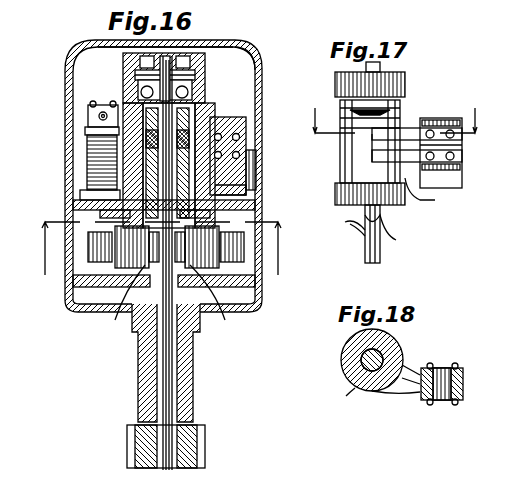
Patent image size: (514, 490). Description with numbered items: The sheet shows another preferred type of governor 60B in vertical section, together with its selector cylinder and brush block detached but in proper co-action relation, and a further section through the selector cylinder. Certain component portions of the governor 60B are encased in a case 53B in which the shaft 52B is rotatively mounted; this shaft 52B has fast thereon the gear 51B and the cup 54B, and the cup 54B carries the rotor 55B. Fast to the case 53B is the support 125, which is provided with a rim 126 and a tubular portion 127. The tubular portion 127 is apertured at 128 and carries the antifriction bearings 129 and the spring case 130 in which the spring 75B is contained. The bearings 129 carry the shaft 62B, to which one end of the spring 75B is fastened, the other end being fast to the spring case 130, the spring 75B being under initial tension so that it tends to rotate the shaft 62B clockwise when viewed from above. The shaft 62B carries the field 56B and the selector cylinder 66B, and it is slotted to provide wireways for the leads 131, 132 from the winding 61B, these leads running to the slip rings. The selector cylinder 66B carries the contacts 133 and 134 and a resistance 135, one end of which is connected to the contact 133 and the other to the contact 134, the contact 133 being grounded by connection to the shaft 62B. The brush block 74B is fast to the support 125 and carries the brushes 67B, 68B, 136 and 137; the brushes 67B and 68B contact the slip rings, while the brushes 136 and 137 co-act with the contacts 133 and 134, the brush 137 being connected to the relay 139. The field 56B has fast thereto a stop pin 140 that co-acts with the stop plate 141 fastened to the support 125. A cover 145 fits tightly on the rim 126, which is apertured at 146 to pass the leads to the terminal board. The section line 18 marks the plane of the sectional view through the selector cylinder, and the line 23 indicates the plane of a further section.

In FIG. 16, the governor 60B is at (207, 38).
In FIG. 16, the spring case 130 is at (205, 52).
In FIG. 16, the cover 145 is at (258, 62).
In FIG. 16, the spring 75B is at (127, 55).
In FIG. 16, the antifriction bearings 129 is at (190, 80).
In FIG. 17, the antifriction bearings 129 is at (336, 195).
In FIG. 16, the aperture 128 is at (172, 100).
In FIG. 16, the tubular portion 127 is at (123, 120).
In FIG. 16, the shaft 62B is at (172, 128).
In FIG. 17, the shaft 62B is at (380, 260).
In FIG. 18, the shaft 62B is at (378, 350).
In FIG. 16, the brush block 74B is at (246, 122).
In FIG. 17, the brush block 74B is at (455, 190).
In FIG. 16, the rim 126 is at (257, 162).
In FIG. 16, the aperture 146 is at (258, 186).
In FIG. 16, the relay 139 is at (88, 116).
In FIG. 16, the selector cylinder 66B is at (125, 148).
In FIG. 17, the selector cylinder 66B is at (440, 198).
In FIG. 18, the selector cylinder 66B is at (404, 372).
In FIG. 16, the support 125 is at (75, 195).
In FIG. 16, the stop plate 141 is at (73, 212).
In FIG. 16, the stop pin 140 is at (100, 232).
In FIG. 16, the section line 23 is at (160, 251).
In FIG. 16, the case 53B is at (262, 290).
In FIG. 16, the rotor 55B is at (70, 300).
In FIG. 16, the field 56B is at (258, 311).
In FIG. 16, the winding 61B is at (226, 320).
In FIG. 16, the cup 54B is at (113, 322).
In FIG. 16, the shaft 52B is at (194, 353).
In FIG. 16, the gear 51B is at (197, 425).
In FIG. 17, the resistance 135 is at (400, 105).
In FIG. 17, the section line 18 is at (396, 114).
In FIG. 17, the brush 68B is at (462, 150).
In FIG. 17, the brush 67B is at (462, 170).
In FIG. 17, the brush 136 is at (405, 135).
In FIG. 18, the brush 136 is at (372, 393).
In FIG. 17, the lead 132 is at (397, 227).
In FIG. 17, the lead 131 is at (355, 232).
In FIG. 18, the contact 133 is at (344, 350).
In FIG. 18, the contact 134 is at (352, 398).
In FIG. 18, the brush 137 is at (436, 366).